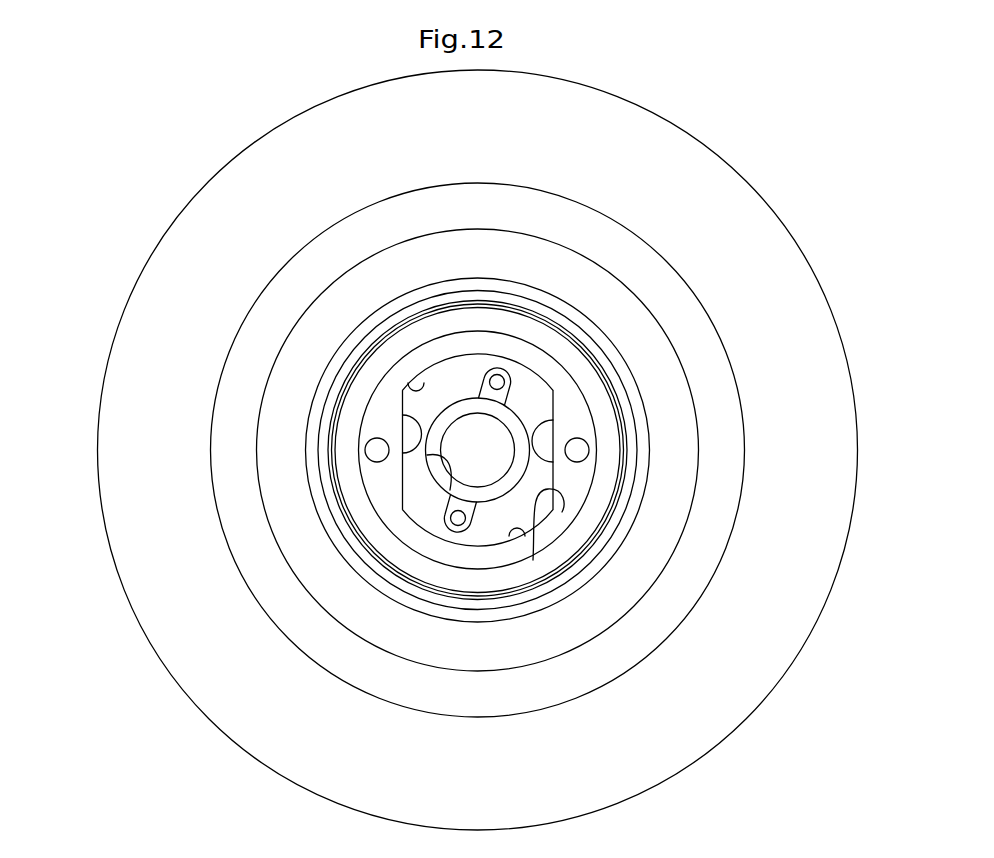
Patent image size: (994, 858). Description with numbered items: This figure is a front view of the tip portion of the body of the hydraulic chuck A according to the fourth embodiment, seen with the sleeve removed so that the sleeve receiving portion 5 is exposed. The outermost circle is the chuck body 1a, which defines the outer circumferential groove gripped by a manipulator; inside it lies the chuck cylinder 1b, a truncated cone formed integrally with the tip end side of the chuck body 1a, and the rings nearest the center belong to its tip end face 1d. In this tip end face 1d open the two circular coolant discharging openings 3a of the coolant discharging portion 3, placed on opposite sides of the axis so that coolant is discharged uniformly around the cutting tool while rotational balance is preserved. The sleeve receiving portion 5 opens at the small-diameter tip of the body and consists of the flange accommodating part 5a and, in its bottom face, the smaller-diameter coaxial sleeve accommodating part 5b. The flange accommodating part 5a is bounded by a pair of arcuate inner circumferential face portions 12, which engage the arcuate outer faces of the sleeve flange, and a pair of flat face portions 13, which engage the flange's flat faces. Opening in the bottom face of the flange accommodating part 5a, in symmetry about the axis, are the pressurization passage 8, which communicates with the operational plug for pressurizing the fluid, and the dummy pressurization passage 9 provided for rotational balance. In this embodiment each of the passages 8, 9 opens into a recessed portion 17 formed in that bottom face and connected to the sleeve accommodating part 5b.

The chuck body 1a is at (176, 211).
The chuck cylinder 1b is at (417, 565).
The tip end face 1d is at (588, 428).
The coolant discharging portion 3 is at (479, 481).
The coolant discharging opening 3a is at (377, 450).
The sleeve receiving portion 5 is at (489, 441).
The flange accommodating part 5a is at (553, 508).
The sleeve accommodating part 5b is at (450, 492).
The pressurization passage 8 is at (497, 382).
The pressurization passage 9 is at (458, 518).
The arcuate inner circumferential face portion 12 is at (410, 386).
The flat face portion 13 is at (402, 416).
The recessed portion 17 is at (481, 394).
The hydraulic chuck A is at (763, 160).